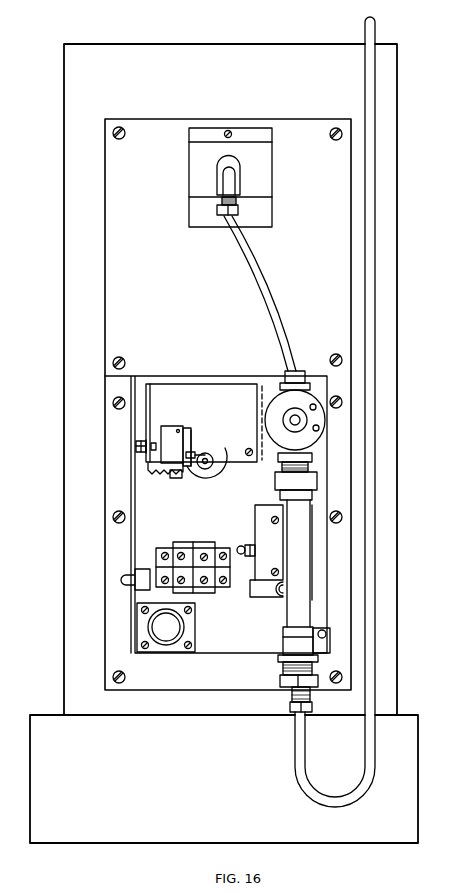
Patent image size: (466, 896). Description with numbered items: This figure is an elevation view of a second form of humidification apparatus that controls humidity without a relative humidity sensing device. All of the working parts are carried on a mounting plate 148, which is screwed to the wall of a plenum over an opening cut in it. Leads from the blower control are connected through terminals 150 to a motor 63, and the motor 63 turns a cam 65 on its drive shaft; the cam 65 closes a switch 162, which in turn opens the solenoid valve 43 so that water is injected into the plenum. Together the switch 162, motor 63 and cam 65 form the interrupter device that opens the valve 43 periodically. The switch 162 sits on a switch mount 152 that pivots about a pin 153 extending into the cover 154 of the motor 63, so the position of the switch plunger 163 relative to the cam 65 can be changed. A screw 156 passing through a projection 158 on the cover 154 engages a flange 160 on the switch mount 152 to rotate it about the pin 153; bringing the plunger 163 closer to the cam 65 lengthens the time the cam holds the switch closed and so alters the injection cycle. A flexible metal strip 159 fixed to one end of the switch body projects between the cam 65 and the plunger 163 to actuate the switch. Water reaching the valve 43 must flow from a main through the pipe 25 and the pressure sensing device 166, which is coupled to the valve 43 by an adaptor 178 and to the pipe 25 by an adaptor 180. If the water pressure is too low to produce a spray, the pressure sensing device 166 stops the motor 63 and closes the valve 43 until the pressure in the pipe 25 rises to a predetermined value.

The mounting plate 148 is at (63, 188).
The pipe 25 is at (372, 112).
The solenoid valve 43 is at (314, 402).
The cover 154 is at (172, 390).
The flange 160 is at (162, 429).
The switch 162 is at (181, 430).
The pin 153 is at (192, 442).
The flexible metal strip 159 is at (192, 455).
The plunger 163 is at (206, 456).
The cam 65 is at (211, 463).
The motor 63 is at (212, 479).
The switch mount 152 is at (182, 473).
The projection 158 is at (147, 421).
The screw 156 is at (137, 453).
The adaptor 178 is at (279, 464).
The terminals 150 is at (190, 548).
The pressure sensing device 166 is at (321, 580).
The adaptor 180 is at (283, 667).